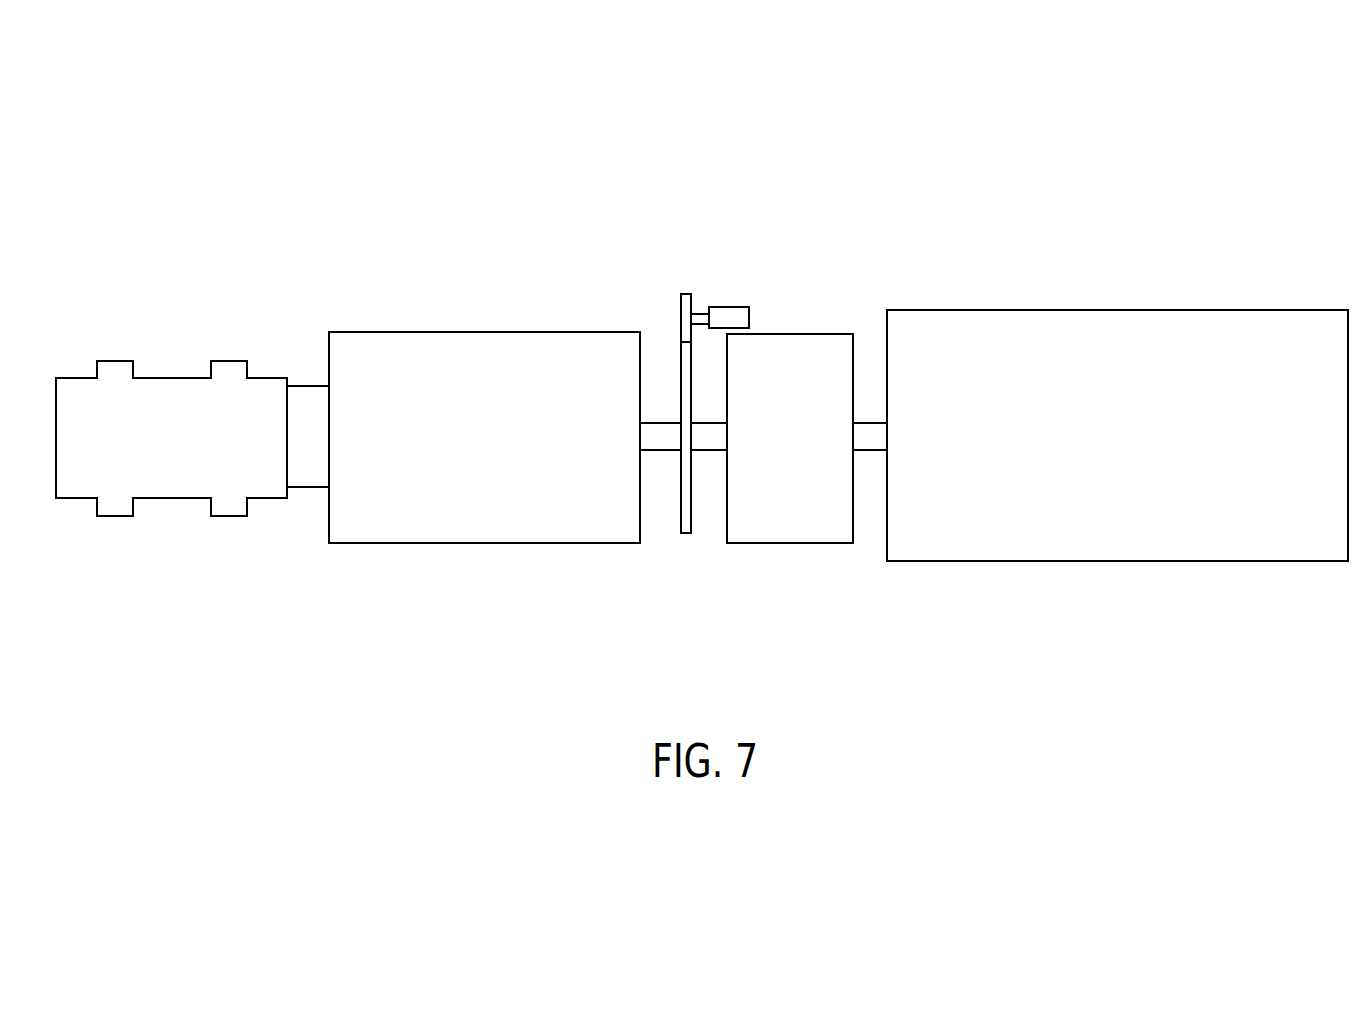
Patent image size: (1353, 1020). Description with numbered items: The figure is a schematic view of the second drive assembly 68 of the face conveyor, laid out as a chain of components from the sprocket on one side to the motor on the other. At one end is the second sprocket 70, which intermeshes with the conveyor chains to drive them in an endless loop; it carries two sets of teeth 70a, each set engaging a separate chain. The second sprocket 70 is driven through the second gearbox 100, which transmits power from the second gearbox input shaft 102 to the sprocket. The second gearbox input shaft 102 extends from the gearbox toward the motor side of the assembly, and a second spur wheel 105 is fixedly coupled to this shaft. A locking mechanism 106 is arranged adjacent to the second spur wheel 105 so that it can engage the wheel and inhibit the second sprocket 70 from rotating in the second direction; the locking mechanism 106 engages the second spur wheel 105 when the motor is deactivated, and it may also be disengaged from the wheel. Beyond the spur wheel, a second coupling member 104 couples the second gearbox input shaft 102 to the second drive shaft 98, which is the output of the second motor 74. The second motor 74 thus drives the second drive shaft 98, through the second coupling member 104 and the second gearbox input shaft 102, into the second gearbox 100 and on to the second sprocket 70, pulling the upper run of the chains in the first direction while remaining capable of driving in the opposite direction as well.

The second drive assembly 68 is at (922, 151).
The second sprocket 70 is at (178, 322).
The sets of teeth 70a is at (113, 372).
The second gearbox 100 is at (530, 342).
The second gearbox input shaft 102 is at (672, 432).
The second spur wheel 105 is at (684, 535).
The locking mechanism 106 is at (701, 296).
The second coupling member 104 is at (810, 345).
The second drive shaft 98 is at (880, 432).
The second motor 74 is at (1087, 325).